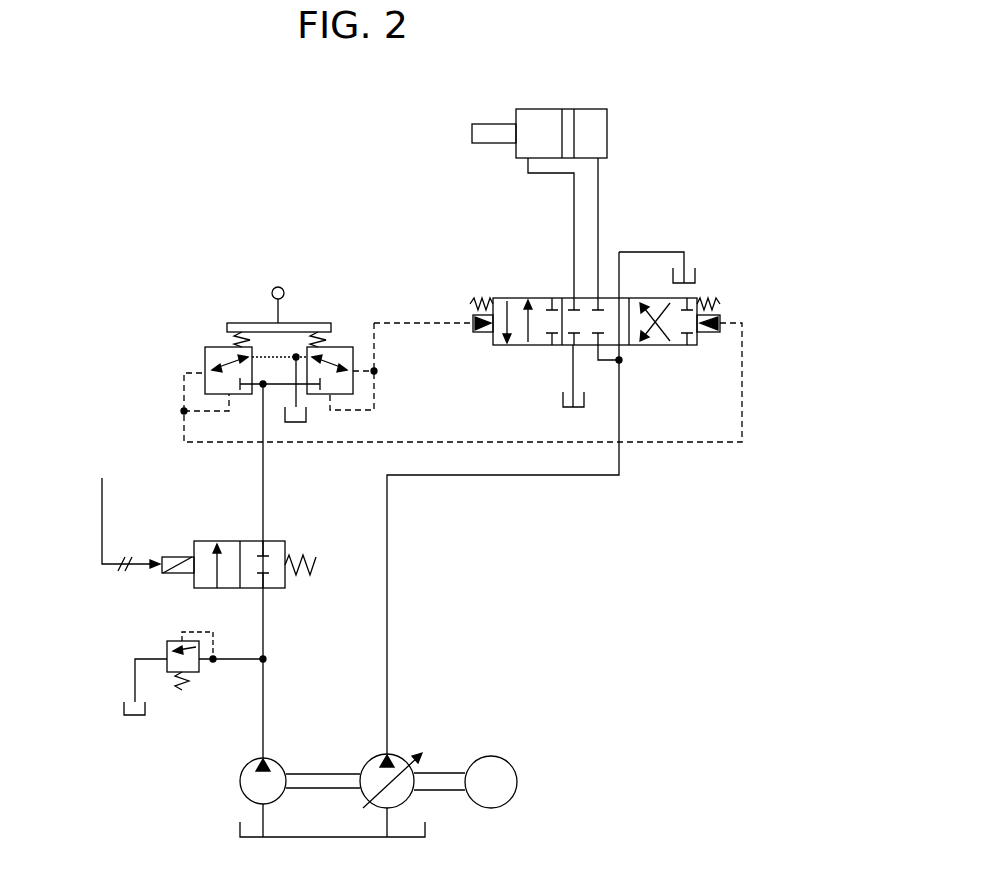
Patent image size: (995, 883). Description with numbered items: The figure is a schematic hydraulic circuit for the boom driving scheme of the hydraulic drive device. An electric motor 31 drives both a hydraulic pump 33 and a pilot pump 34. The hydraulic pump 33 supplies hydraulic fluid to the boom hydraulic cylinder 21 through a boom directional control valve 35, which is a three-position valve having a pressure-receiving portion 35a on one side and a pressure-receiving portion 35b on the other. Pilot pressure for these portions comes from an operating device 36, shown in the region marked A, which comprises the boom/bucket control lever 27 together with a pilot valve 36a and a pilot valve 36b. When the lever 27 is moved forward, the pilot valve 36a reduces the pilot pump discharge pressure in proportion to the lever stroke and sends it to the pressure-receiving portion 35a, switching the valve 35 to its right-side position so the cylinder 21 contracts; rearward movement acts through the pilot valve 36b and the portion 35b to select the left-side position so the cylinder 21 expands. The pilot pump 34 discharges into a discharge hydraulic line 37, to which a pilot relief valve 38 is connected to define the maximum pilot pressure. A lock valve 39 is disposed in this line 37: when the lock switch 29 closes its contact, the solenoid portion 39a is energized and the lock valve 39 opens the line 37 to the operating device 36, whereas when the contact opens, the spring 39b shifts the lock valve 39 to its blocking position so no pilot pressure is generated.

The boom hydraulic cylinder 21 is at (607, 133).
The boom/bucket control lever 27 is at (284, 290).
The lock switch 29 is at (107, 482).
The electric motor 31 is at (510, 757).
The hydraulic pump 33 is at (373, 762).
The pilot pump 34 is at (250, 762).
The boom directional control valve 35 is at (498, 292).
The pressure-receiving portion 35a is at (708, 345).
The pressure-receiving portion 35b is at (484, 345).
The operating device 36 is at (260, 332).
The pilot valve 36a is at (205, 352).
The pilot valve 36b is at (340, 347).
The discharge hydraulic line 37 is at (263, 623).
The pilot relief valve 38 is at (178, 641).
The lock valve 39 is at (242, 521).
The solenoid portion 39a is at (170, 557).
The spring 39b is at (306, 557).
The operating device A is at (255, 294).